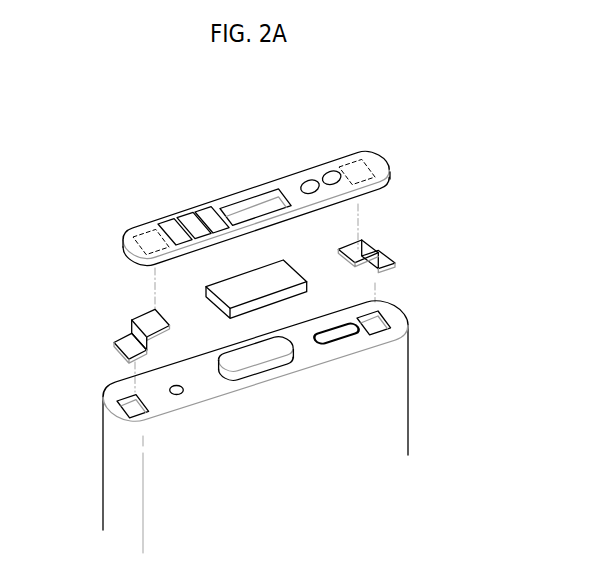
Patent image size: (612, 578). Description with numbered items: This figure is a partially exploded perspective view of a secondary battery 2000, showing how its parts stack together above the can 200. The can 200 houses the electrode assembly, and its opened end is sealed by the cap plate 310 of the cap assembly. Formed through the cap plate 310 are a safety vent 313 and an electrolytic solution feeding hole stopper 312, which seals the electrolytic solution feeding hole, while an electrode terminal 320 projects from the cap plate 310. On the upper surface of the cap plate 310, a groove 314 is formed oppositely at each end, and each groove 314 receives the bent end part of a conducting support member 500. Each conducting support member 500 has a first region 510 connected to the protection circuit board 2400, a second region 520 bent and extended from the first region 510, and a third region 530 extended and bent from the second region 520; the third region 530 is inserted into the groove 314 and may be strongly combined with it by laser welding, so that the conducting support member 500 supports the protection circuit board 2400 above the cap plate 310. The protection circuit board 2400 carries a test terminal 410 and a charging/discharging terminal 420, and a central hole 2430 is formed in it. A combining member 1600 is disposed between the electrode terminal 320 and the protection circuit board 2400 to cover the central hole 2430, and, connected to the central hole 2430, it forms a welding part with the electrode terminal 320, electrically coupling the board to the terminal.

The secondary battery 2000 is at (77, 118).
The can 200 is at (405, 413).
The cap plate 310 is at (217, 392).
The electrolytic solution feeding hole stopper 312 is at (179, 396).
The safety vent 313 is at (337, 344).
The groove 314 is at (121, 401).
The electrode terminal 320 is at (259, 361).
The combining member 1600 is at (295, 261).
The conducting support member 500 is at (251, 304).
The first region 510 is at (148, 320).
The second region 520 is at (140, 328).
The third region 530 is at (128, 350).
The protection circuit board 2400 is at (123, 217).
The central hole 2430 is at (256, 204).
The charging/discharging terminal 420 is at (199, 213).
The test terminal 410 is at (331, 171).